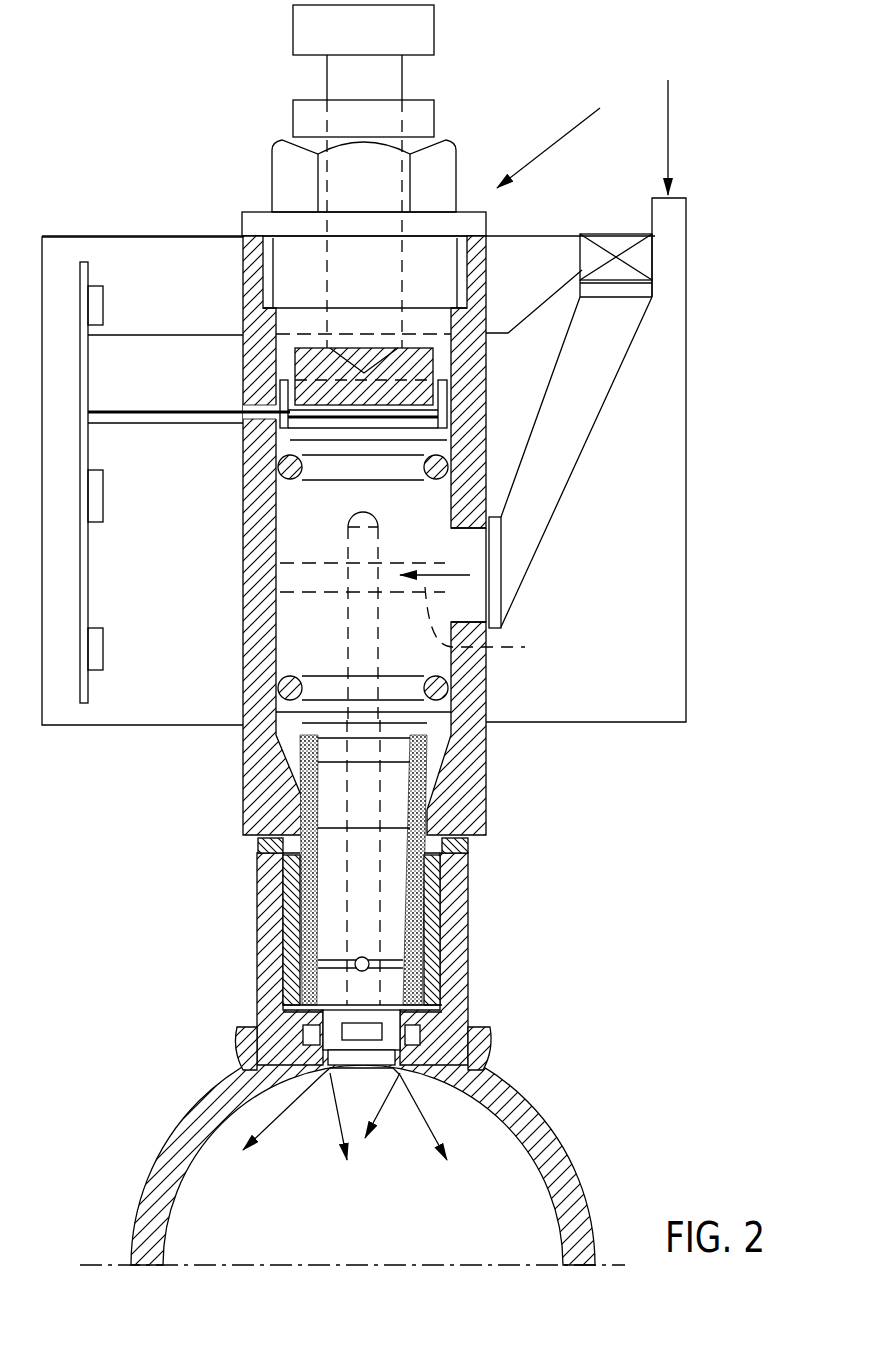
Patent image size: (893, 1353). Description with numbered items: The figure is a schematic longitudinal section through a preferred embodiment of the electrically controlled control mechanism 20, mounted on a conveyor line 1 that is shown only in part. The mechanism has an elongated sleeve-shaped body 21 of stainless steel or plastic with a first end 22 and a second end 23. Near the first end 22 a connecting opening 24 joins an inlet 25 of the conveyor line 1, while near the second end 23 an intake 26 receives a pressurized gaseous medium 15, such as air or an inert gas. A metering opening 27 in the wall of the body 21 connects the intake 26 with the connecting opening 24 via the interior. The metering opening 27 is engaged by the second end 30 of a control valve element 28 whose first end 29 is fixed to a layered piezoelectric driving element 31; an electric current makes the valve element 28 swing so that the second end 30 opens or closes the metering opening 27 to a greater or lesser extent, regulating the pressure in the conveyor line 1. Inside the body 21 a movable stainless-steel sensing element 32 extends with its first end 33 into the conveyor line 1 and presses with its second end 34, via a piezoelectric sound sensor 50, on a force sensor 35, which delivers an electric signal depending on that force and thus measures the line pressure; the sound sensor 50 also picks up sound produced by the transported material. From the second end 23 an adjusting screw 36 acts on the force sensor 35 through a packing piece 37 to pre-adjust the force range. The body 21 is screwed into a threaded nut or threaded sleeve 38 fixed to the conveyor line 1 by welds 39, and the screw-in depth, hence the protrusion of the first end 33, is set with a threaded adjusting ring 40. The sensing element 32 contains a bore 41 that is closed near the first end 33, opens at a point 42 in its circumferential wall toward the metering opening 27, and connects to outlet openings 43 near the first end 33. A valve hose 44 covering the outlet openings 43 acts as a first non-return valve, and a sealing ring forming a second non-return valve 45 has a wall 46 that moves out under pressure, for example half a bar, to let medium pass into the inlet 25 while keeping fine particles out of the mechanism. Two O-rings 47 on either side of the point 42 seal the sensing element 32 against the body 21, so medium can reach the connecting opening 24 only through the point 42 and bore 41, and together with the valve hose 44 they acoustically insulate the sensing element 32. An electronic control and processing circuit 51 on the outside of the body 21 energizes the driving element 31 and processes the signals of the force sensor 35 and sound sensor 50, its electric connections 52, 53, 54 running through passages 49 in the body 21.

The conveyor line 1 is at (541, 1140).
The pressurized gaseous medium 15 is at (676, 125).
The control mechanism 20 is at (598, 104).
The sleeve-shaped body 21 is at (468, 795).
The first end 22 is at (440, 905).
The second end 23 is at (478, 258).
The connecting opening 24 is at (427, 983).
The inlet 25 is at (418, 1082).
The intake 26 is at (668, 204).
The metering opening 27 is at (468, 551).
The control valve element 28 is at (598, 372).
The first end 29 is at (640, 290).
The second end 30 is at (495, 608).
The piezoelectric driving element 31 is at (618, 243).
The sensing element 32 is at (412, 940).
The first end 33 is at (330, 1072).
The second end 34 is at (300, 436).
The force sensor 35 is at (297, 412).
The adjusting means 36 is at (382, 83).
The packing piece 37 is at (420, 366).
The threaded nut or threaded sleeve 38 is at (468, 870).
The welds 39 is at (245, 1048).
The threaded adjusting ring 40 is at (258, 845).
The bore 41 is at (355, 883).
The opening point 42 is at (489, 623).
The outlet openings 43 is at (355, 969).
The valve hose 44 is at (308, 937).
The second non-return valve 45 is at (300, 1028).
The wall 46 is at (422, 1025).
The O-rings 47 is at (291, 481).
The passages 49 is at (260, 372).
The sound sensor 50 is at (412, 422).
The electronic control and processing circuit 51 is at (80, 695).
The electric connection 52 is at (112, 413).
The electric connection 53 is at (129, 424).
The electric connection 54 is at (171, 335).